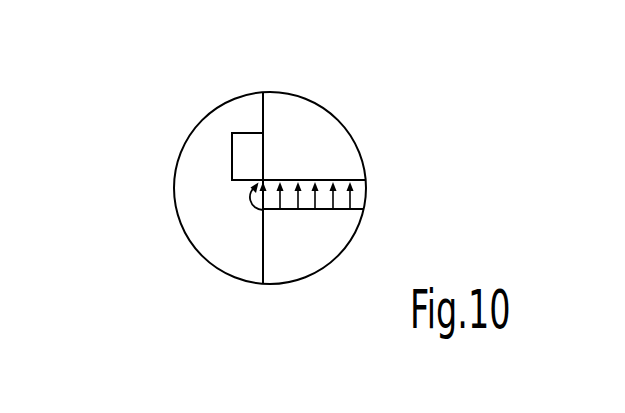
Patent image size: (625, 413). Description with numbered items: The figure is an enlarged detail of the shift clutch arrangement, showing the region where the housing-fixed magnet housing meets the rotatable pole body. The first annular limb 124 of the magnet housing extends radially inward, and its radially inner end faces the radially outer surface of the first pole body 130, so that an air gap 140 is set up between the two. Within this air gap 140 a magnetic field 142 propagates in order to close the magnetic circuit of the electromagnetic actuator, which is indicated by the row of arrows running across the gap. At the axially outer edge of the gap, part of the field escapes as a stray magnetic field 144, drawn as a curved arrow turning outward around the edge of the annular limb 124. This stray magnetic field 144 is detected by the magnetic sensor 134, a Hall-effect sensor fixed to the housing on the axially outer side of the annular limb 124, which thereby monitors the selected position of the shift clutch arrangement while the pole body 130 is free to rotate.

The first annular limb 124 is at (322, 142).
The first pole body 130 is at (298, 245).
The magnetic sensor 134 is at (243, 155).
The air gap 140 is at (360, 192).
The magnetic field 142 is at (357, 202).
The stray magnetic field 144 is at (248, 197).